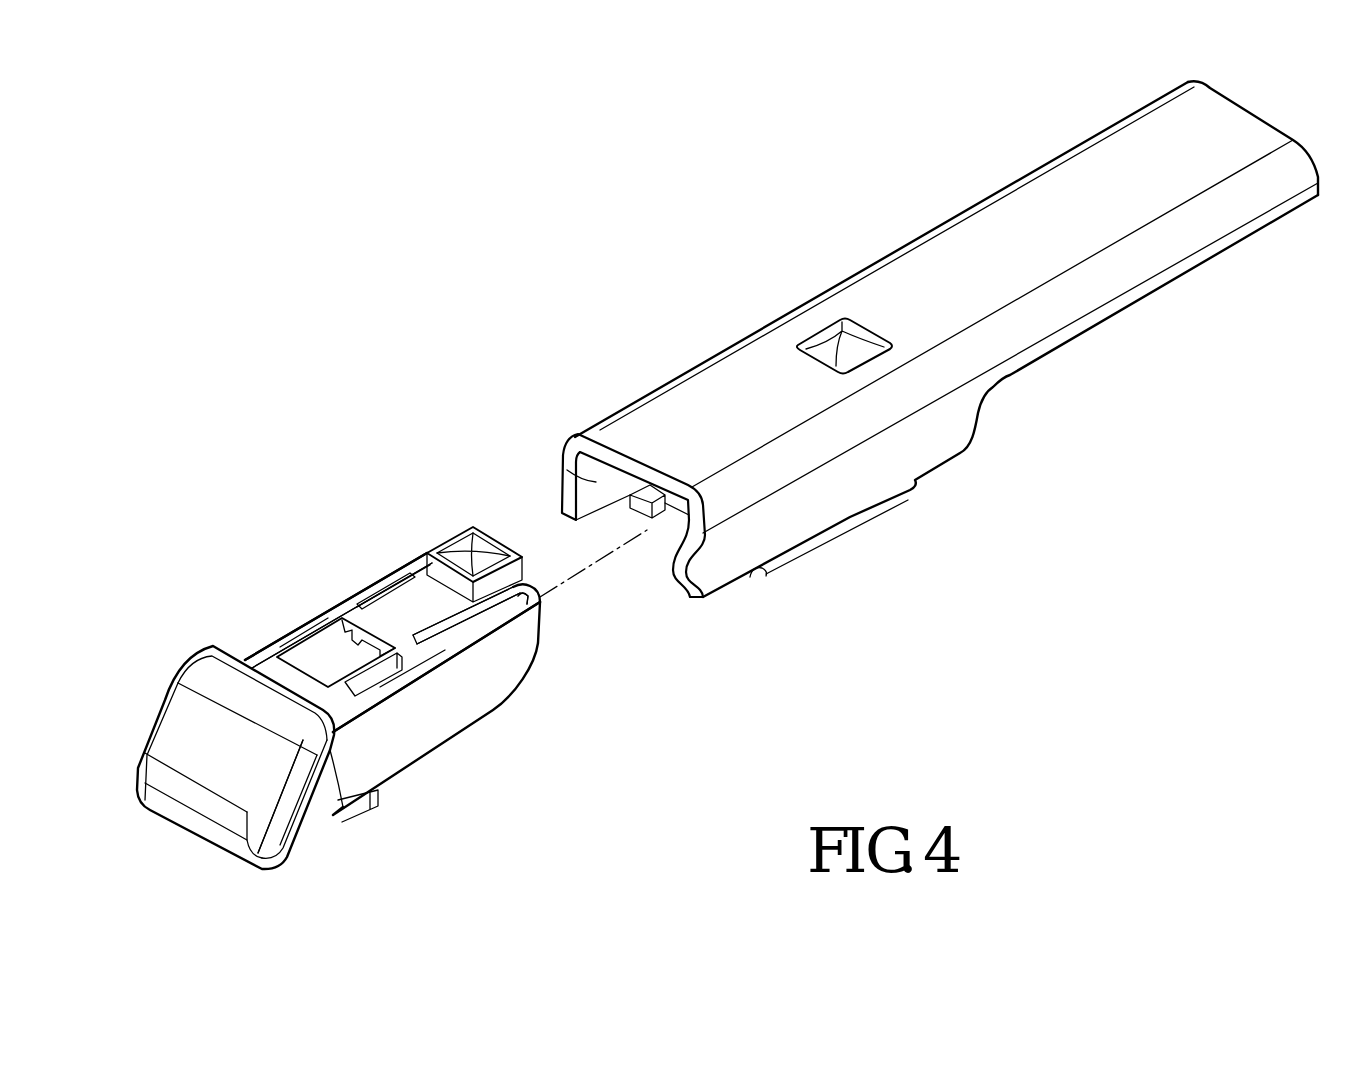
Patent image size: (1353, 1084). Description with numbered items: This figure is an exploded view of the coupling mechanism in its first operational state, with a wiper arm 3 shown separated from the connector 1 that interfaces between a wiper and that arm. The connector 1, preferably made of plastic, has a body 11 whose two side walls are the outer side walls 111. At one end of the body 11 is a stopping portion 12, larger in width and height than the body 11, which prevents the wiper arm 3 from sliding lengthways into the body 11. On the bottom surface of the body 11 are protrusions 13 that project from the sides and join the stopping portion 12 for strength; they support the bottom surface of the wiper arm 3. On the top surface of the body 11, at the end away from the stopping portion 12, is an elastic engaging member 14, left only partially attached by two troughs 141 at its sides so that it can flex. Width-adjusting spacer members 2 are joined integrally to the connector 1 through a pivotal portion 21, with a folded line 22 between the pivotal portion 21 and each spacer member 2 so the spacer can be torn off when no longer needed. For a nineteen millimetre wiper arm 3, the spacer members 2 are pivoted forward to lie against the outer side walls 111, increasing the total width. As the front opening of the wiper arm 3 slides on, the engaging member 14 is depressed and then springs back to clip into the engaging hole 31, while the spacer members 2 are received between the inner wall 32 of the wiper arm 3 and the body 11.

The connector 1 is at (150, 696).
The body 11 is at (283, 636).
The outer side wall 111 is at (420, 663).
The stopping portion 12 is at (308, 823).
The protrusion 13 is at (358, 805).
The engaging member 14 is at (413, 603).
The trough 141 is at (463, 627).
The width-adjusting spacer member 2 is at (331, 596).
The pivotal portion 21 is at (524, 604).
The folded line 22 is at (541, 601).
The wiper arm 3 is at (940, 339).
The engaging hole 31 is at (822, 333).
The inner wall 32 is at (593, 483).